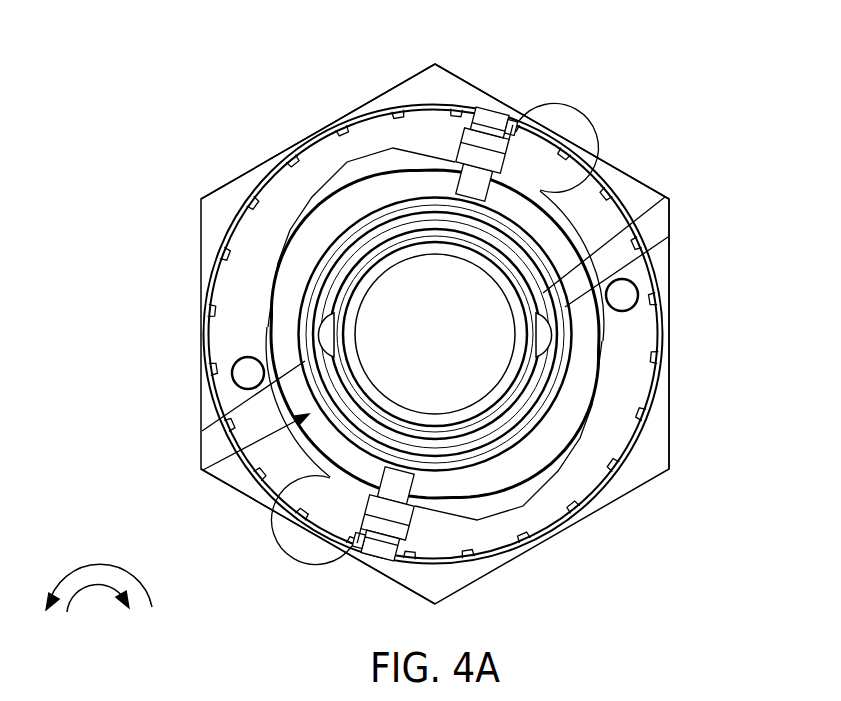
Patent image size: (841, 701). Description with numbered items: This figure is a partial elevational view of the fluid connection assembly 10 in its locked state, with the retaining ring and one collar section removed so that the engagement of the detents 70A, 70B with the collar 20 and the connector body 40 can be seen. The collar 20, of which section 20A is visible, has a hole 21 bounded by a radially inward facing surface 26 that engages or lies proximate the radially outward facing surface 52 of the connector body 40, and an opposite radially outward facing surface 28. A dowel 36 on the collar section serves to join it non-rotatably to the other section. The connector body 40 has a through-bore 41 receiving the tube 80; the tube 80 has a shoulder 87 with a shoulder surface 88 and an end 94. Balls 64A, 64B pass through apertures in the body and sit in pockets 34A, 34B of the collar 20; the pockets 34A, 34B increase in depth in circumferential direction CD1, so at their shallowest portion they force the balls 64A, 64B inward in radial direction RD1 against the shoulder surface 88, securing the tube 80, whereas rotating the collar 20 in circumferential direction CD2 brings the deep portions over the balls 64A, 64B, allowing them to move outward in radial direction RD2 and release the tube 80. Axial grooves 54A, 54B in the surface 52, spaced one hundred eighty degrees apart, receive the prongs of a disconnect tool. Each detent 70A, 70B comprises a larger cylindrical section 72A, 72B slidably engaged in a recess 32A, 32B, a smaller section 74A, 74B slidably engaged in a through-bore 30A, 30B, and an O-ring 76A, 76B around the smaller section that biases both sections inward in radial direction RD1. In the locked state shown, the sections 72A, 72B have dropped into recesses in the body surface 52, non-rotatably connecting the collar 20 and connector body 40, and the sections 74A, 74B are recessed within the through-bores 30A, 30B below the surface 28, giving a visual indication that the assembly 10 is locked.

The fluid connection assembly 10 is at (166, 98).
The collar 20 is at (243, 233).
The section 20A is at (247, 240).
The hole 21 is at (205, 470).
The radially inward facing surface 26 is at (637, 188).
The radially outward facing surface 28 is at (610, 170).
The through-bore 30A is at (463, 103).
The through-bore 30B is at (355, 540).
The recess 32A is at (435, 95).
The recess 32B is at (347, 503).
The pocket 34A is at (548, 487).
The pocket 34B is at (320, 207).
The dowel 36 is at (248, 373).
The connector body 40 is at (440, 64).
The through-bore 41 is at (639, 290).
The radially outward facing surface 52 is at (270, 165).
The groove 54A is at (593, 158).
The groove 54B is at (305, 505).
The ball 64A is at (553, 338).
The ball 64B is at (312, 327).
The detent 70A is at (445, 145).
The detent 70B is at (422, 534).
The section 72A is at (577, 107).
The section 72B is at (512, 558).
The section 74A is at (507, 122).
The section 74B is at (373, 553).
The O-ring 76A is at (520, 122).
The O-ring 76B is at (410, 565).
The tube 80 is at (498, 393).
The shoulder 87 is at (670, 199).
The shoulder surface 88 is at (560, 285).
The end 94 is at (505, 418).
The radial direction RD1 is at (470, 297).
The radial direction RD2 is at (466, 345).
The circumferential direction CD1 is at (90, 588).
The circumferential direction CD2 is at (110, 565).